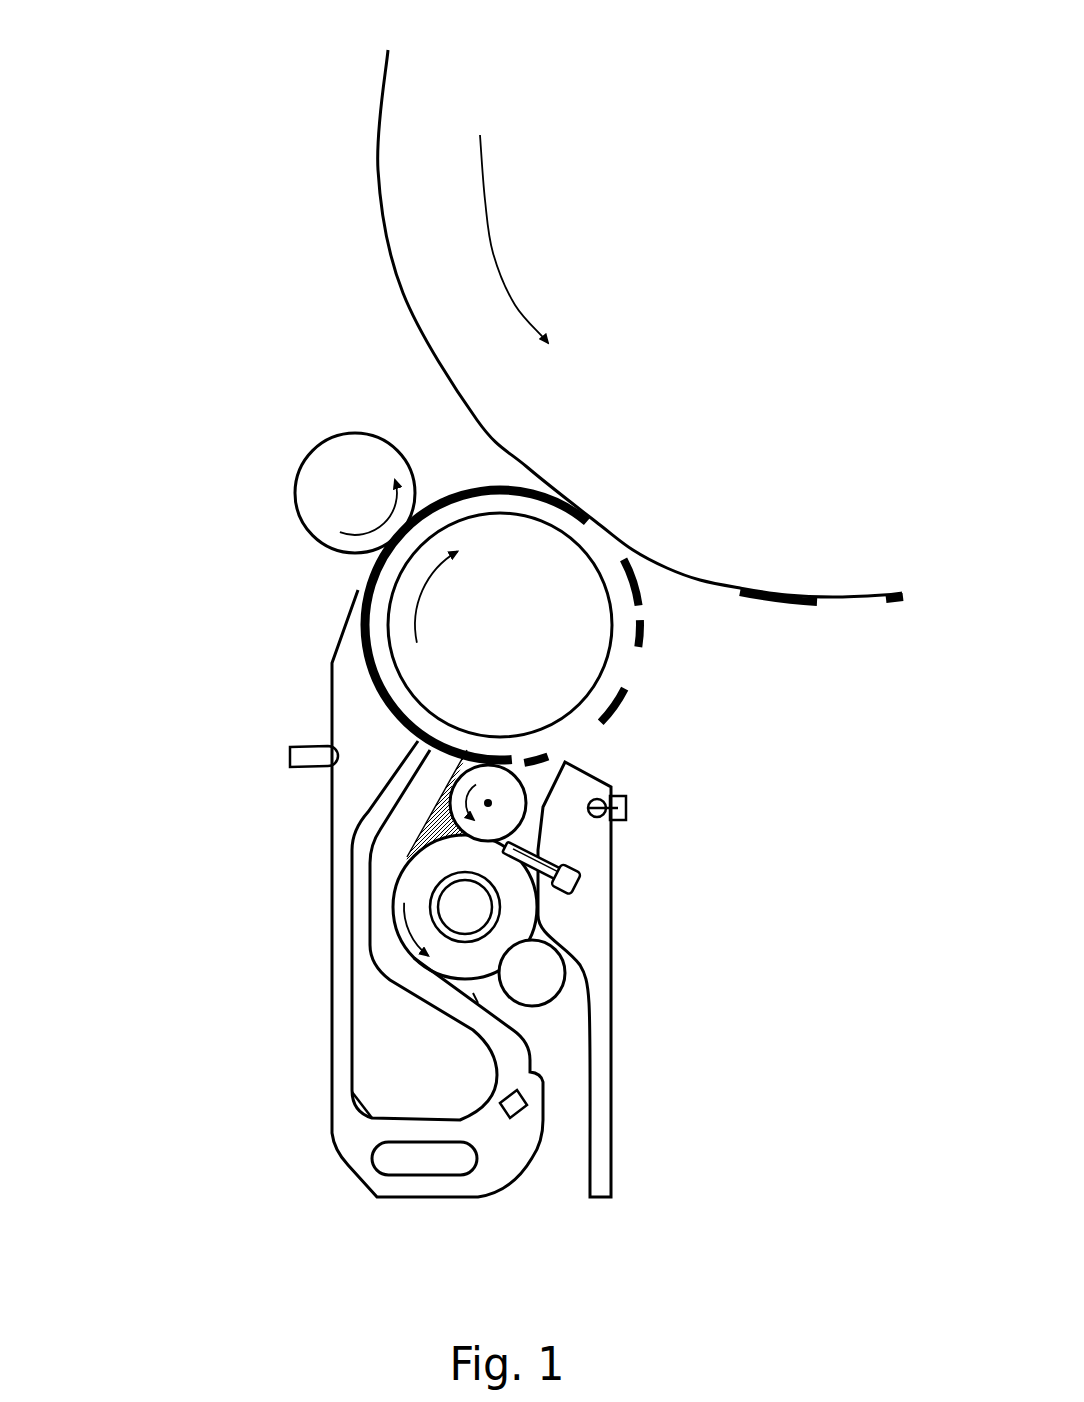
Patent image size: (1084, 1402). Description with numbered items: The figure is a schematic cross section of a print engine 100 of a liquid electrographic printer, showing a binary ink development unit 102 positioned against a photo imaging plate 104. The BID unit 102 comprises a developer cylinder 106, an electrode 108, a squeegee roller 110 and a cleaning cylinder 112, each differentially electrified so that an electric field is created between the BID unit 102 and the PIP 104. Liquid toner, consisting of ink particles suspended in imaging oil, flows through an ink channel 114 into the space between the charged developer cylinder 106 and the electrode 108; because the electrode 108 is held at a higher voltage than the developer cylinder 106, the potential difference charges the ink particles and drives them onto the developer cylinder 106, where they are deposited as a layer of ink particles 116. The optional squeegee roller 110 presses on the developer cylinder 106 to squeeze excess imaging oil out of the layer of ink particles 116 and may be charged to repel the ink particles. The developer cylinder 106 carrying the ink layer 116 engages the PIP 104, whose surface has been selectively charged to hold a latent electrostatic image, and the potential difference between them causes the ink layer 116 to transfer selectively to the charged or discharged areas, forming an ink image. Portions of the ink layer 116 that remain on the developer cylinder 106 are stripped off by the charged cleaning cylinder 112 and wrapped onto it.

The print engine 100 is at (480, 41).
The binary ink development unit 102 is at (213, 527).
The photo imaging plate 104 is at (427, 296).
The developer cylinder 106 is at (495, 626).
The electrode 108 is at (343, 773).
The squeegee roller 110 is at (308, 450).
The cleaning cylinder 112 is at (527, 785).
The ink channel 114 is at (397, 782).
The layer of ink particles 116 is at (360, 665).